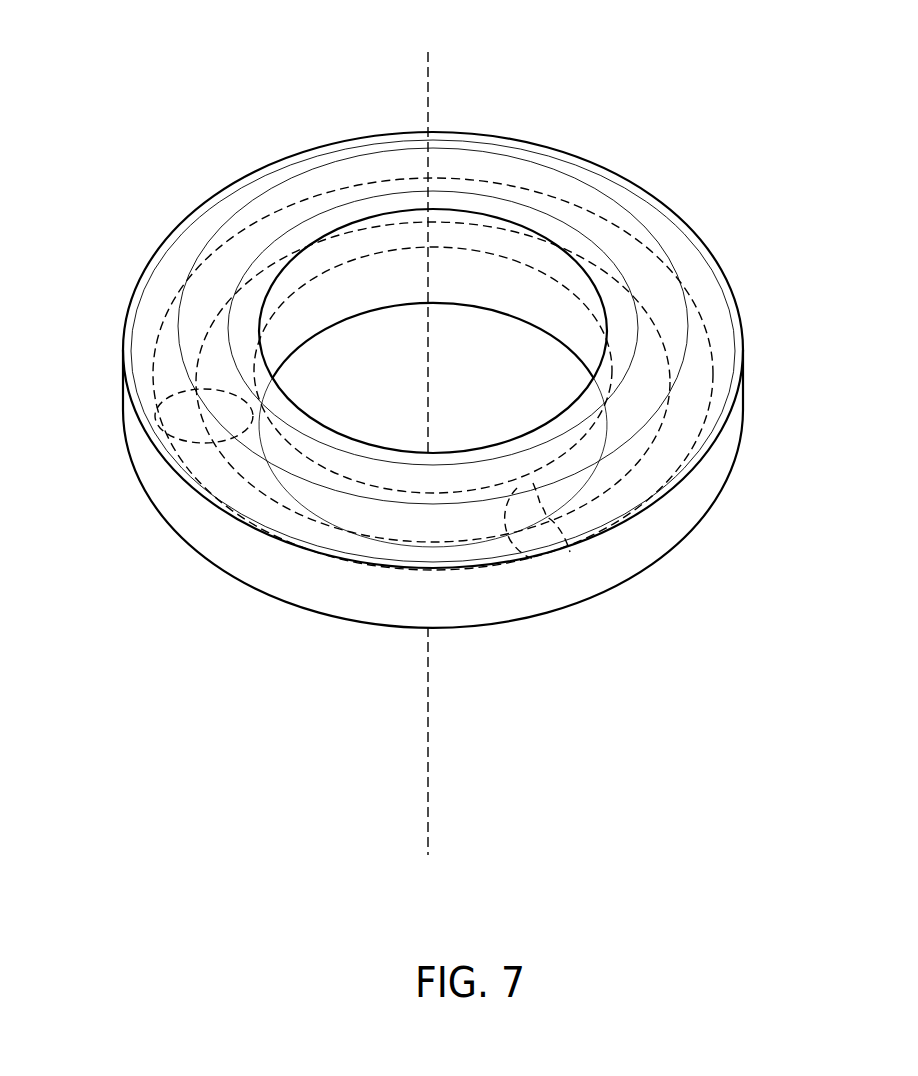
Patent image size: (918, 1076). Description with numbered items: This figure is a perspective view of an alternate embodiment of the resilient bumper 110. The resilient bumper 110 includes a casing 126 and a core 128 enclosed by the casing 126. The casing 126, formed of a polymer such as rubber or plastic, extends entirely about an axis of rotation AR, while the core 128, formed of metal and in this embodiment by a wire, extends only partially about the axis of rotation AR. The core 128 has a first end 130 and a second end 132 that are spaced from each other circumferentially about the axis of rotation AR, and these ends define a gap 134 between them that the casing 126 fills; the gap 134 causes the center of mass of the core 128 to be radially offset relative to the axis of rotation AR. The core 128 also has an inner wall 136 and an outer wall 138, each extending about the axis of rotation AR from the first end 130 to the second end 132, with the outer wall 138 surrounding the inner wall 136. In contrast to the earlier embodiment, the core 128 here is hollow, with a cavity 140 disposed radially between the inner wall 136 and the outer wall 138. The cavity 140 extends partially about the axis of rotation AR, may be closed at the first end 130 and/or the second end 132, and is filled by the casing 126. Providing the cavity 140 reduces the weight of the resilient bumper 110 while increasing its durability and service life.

The resilient bumper 110 is at (690, 98).
The casing 126 is at (238, 182).
The core 128 is at (184, 275).
The first end 130 is at (187, 427).
The second end 132 is at (530, 557).
The gap 134 is at (327, 543).
The inner wall 136 is at (268, 315).
The outer wall 138 is at (694, 303).
The cavity 140 is at (662, 404).
The axis of rotation AR is at (430, 433).